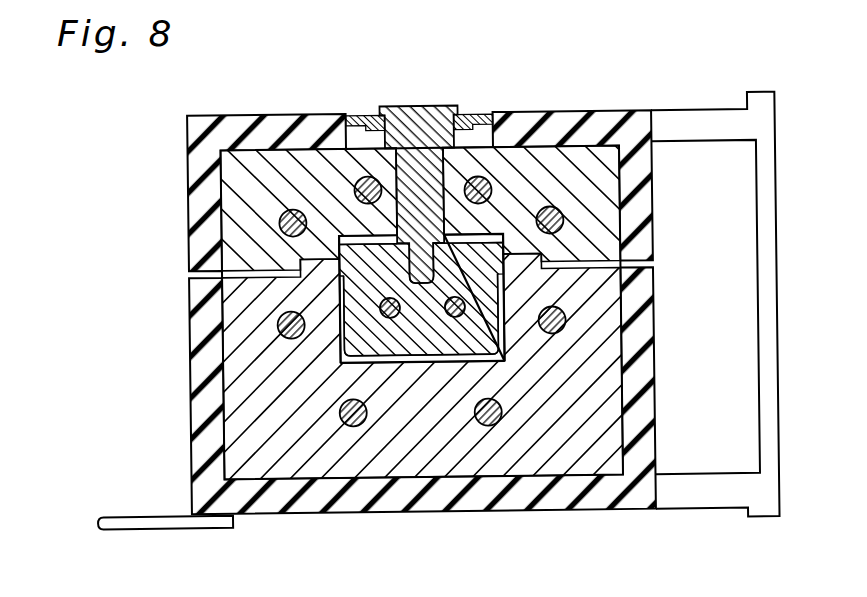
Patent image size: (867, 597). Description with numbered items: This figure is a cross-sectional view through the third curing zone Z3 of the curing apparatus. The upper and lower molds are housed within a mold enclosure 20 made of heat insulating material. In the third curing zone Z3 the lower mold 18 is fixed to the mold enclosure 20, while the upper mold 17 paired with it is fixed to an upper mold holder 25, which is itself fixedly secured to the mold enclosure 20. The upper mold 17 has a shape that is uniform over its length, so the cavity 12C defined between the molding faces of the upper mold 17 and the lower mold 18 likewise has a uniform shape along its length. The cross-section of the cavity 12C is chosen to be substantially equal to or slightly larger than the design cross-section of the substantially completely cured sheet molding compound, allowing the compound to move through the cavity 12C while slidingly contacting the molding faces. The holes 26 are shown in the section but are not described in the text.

The mold enclosure 20 is at (217, 138).
The upper mold holder 25 is at (284, 190).
The through holes 26 is at (488, 181).
The upper mold 17 is at (481, 259).
The lower mold 18 is at (500, 458).
The cavity 12C is at (401, 358).
The third curing zone Z3 is at (443, 78).